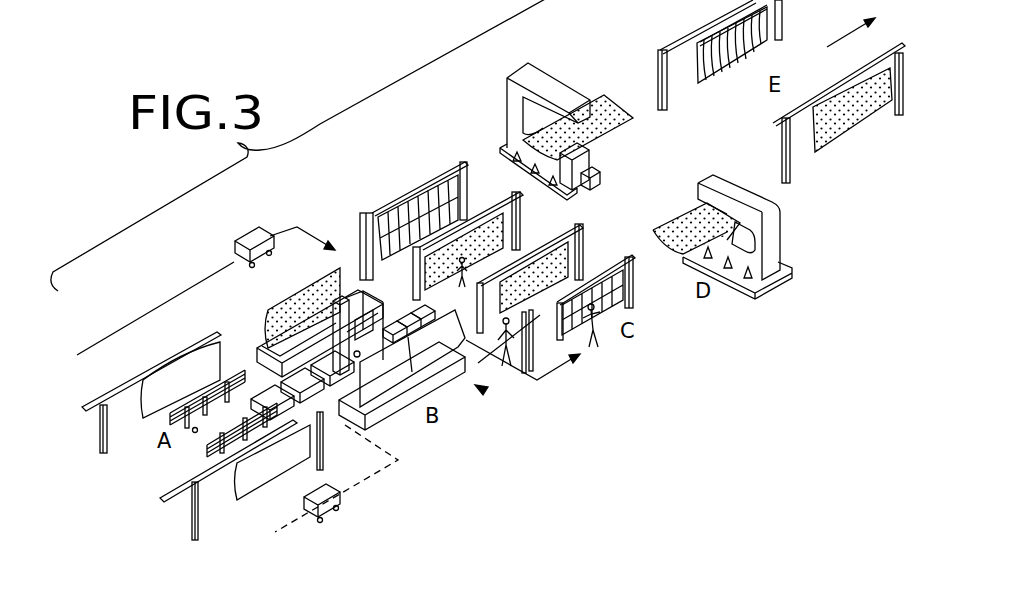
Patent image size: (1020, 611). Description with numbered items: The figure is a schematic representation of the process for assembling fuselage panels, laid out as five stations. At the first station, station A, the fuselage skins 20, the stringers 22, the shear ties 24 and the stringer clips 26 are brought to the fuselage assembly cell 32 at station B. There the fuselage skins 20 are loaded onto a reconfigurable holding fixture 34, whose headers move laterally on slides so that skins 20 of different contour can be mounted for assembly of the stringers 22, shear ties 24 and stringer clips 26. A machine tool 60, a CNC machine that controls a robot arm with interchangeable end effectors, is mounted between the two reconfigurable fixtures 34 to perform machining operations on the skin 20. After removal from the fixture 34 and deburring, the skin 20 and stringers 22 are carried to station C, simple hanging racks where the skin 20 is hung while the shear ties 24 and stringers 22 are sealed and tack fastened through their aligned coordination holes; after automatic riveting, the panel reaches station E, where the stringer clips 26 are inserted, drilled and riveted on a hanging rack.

The fuselage skin 20 is at (184, 382).
The stringer 22 is at (210, 457).
The shear tie 24 is at (340, 481).
The stringer clip 26 is at (249, 233).
The fuselage assembly cell 32 is at (478, 387).
The reconfigurable holding fixture 34 is at (262, 327).
The machine tool 60 is at (347, 297).